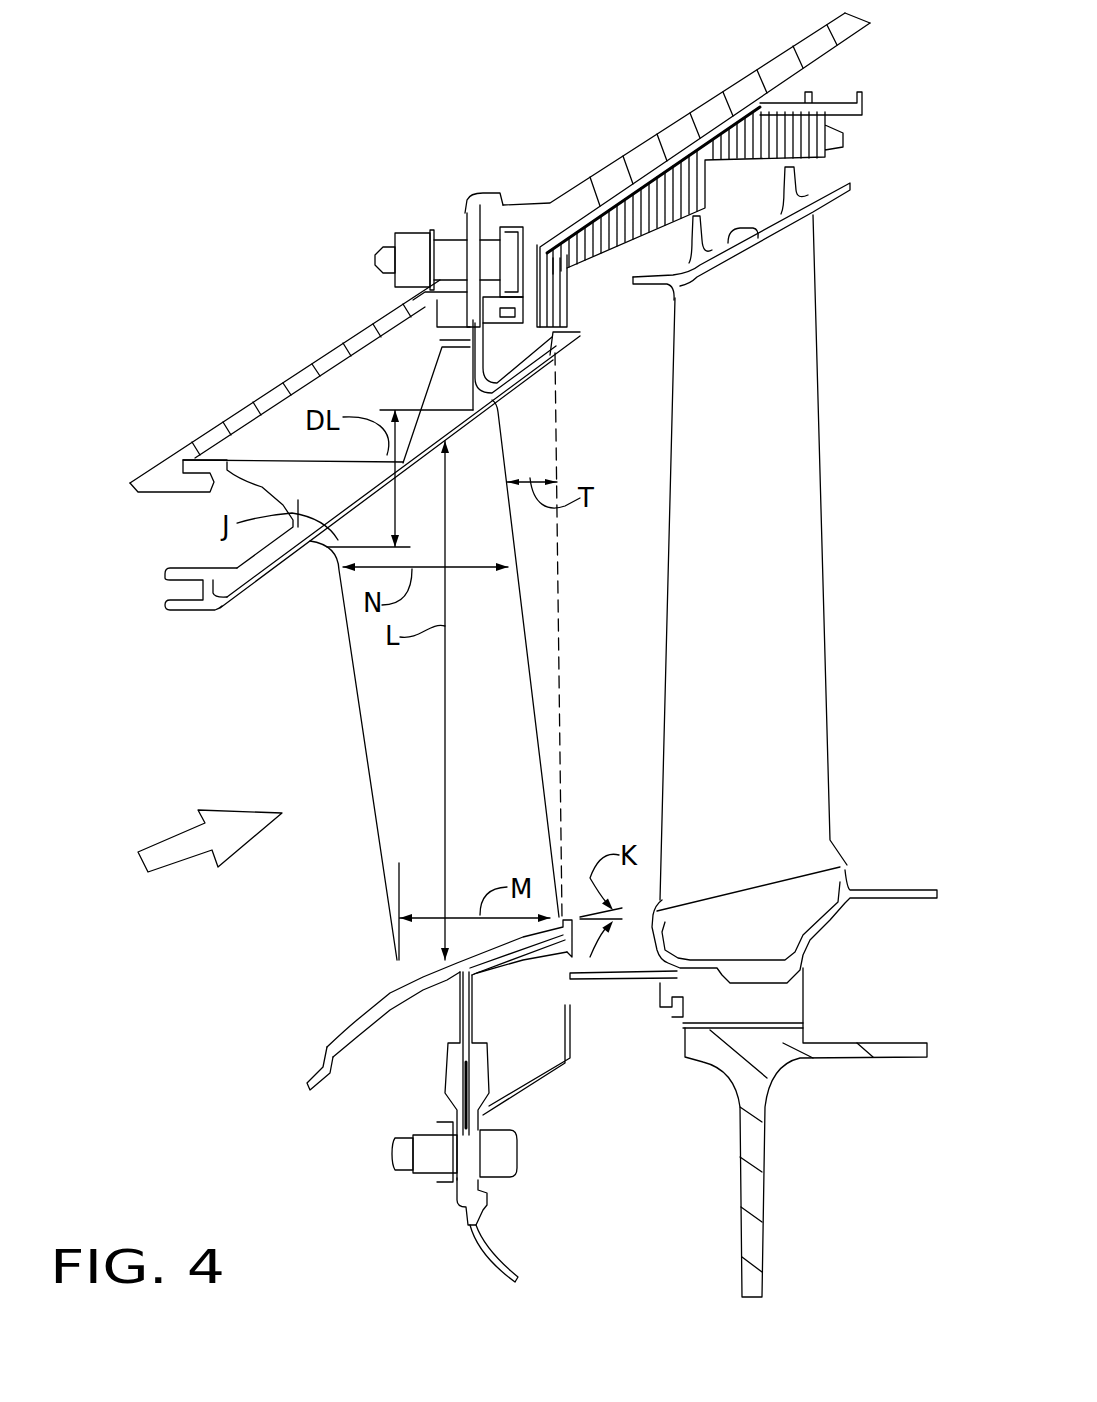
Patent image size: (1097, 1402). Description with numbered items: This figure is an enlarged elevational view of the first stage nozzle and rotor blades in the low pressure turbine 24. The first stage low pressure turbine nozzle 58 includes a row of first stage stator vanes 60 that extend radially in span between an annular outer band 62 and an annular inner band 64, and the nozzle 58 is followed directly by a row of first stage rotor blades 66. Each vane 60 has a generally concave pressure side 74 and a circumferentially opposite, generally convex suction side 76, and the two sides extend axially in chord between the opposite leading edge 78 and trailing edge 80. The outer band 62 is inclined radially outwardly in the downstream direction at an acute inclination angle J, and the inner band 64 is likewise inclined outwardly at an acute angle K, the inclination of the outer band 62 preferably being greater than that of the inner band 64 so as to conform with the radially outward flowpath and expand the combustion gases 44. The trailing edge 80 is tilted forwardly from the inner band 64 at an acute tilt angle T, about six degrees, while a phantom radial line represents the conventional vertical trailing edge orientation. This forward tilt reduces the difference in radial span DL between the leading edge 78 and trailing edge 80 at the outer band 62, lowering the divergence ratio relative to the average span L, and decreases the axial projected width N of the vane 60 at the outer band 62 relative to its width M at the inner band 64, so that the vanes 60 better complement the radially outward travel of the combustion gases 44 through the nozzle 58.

The low pressure turbine 24 is at (614, 141).
The combustion gases 44 is at (170, 836).
The first stage low pressure turbine nozzle 58 is at (268, 316).
The first stage low pressure stator vane 60 is at (445, 656).
The outer band 62 is at (470, 423).
The inner band 64 is at (417, 977).
The first stage low pressure rotor blade 66 is at (760, 603).
The pressure side 74 is at (421, 680).
The suction side 76 is at (397, 717).
The leading edge 78 is at (377, 833).
The trailing edge 80 is at (562, 633).